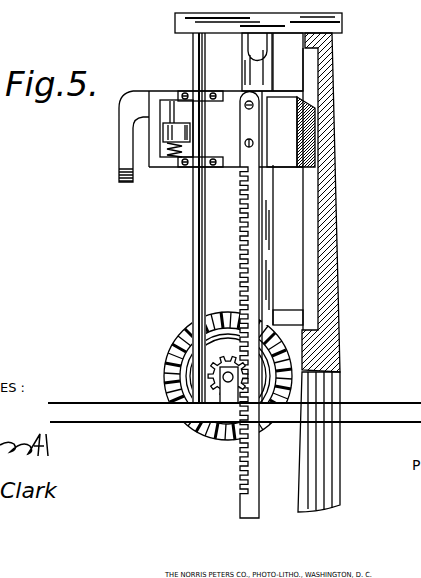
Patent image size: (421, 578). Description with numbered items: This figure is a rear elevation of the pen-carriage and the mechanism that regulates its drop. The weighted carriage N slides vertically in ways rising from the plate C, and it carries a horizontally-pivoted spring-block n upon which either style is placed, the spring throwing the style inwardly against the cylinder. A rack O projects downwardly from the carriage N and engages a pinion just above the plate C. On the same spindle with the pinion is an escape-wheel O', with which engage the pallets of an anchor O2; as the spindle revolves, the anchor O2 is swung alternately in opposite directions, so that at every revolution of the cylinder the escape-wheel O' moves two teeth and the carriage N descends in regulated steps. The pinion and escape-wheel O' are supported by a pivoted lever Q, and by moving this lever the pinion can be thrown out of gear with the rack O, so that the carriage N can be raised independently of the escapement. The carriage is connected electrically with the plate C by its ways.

The rack O is at (233, 305).
The escape-wheel O' is at (219, 376).
The anchor O2 is at (303, 305).
The spring-block n is at (192, 131).
The weighted carriage N is at (291, 132).
The pivoted lever Q is at (136, 402).
The plate C is at (400, 383).